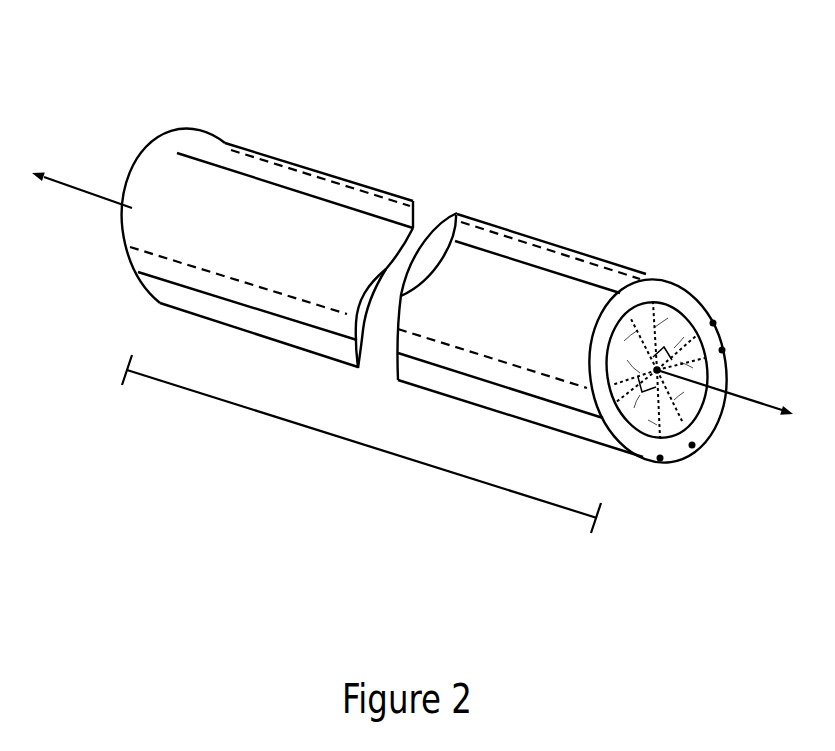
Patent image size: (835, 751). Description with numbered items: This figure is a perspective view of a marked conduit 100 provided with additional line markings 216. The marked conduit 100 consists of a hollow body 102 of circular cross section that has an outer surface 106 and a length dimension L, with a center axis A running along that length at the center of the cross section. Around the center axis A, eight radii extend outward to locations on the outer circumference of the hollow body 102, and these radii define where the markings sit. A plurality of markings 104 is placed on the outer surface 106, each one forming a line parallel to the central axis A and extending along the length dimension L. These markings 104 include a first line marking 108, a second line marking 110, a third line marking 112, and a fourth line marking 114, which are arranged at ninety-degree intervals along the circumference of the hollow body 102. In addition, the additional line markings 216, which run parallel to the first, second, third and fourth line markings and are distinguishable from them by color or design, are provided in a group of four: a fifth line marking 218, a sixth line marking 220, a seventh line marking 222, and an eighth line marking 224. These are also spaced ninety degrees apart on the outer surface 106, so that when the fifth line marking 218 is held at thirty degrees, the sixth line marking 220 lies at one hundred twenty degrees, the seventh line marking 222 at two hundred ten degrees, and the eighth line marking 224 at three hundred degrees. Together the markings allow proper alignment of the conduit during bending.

The marked conduit 100 is at (552, 54).
The hollow body 102 is at (279, 133).
The plurality of markings 104 is at (172, 149).
The outer surface 106 is at (378, 188).
The first line marking 108 is at (507, 258).
The second line marking 110 is at (716, 321).
The third line marking 112 is at (695, 448).
The fourth line marking 114 is at (508, 390).
The additional line markings 216 is at (110, 248).
The fifth line marking 218 is at (580, 250).
The sixth line marking 220 is at (725, 350).
The seventh line marking 222 is at (660, 461).
The eighth line marking 224 is at (570, 383).